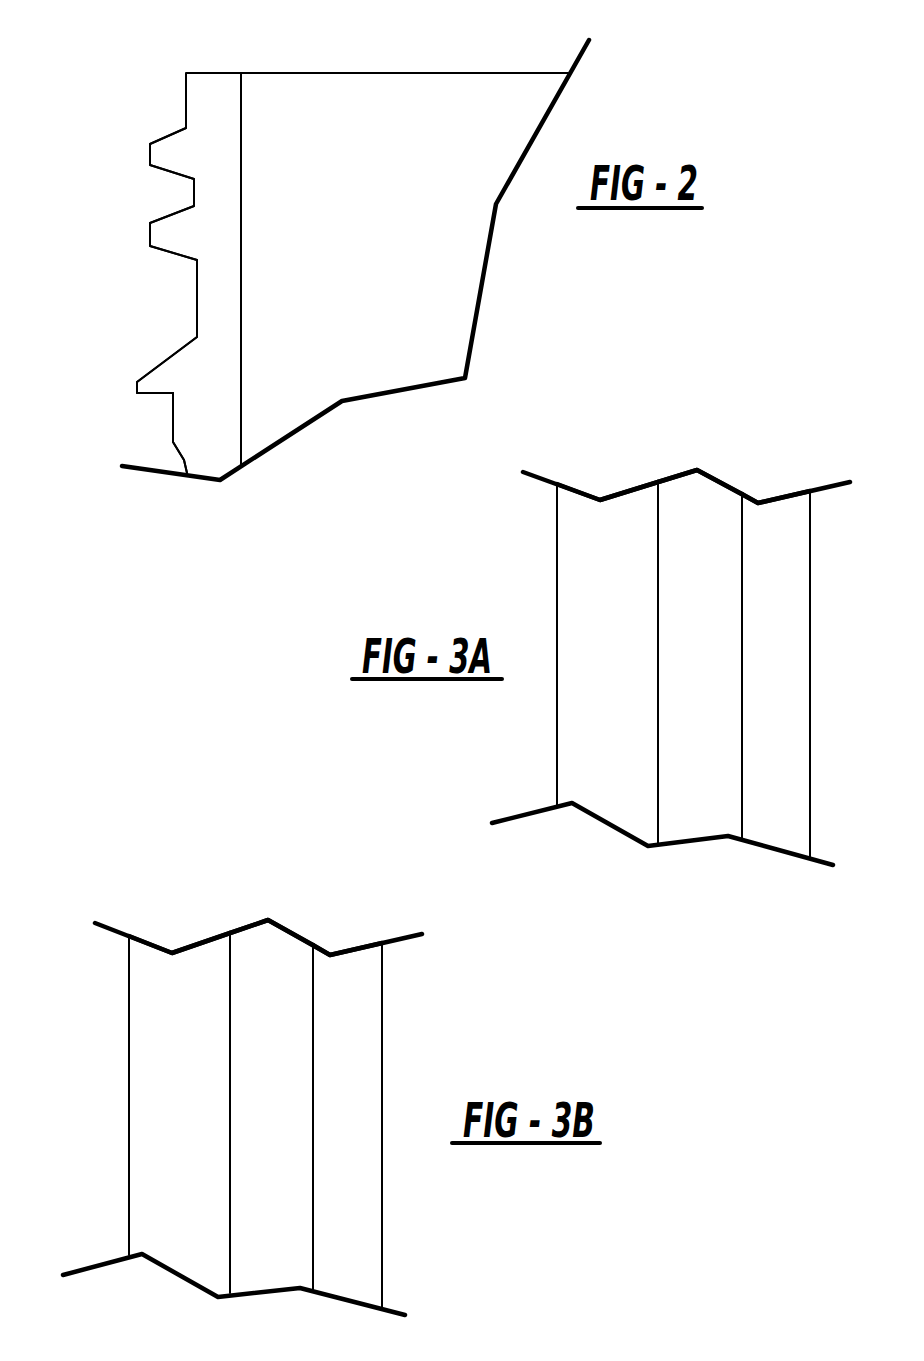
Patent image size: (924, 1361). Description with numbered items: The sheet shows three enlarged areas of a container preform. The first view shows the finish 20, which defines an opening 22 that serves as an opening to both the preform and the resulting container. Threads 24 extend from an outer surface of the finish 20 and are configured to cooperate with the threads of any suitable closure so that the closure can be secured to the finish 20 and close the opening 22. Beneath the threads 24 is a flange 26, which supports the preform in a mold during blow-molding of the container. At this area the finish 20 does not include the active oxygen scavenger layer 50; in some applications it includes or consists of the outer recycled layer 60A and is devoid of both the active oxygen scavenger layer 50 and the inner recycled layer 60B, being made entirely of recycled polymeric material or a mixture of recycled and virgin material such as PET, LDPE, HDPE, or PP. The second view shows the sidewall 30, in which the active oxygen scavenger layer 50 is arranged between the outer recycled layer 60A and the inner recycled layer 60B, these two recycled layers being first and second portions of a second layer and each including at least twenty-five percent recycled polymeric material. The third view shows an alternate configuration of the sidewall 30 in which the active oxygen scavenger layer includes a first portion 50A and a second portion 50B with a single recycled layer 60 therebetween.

In FIG. 2, the finish 20 is at (212, 105).
In FIG. 2, the opening 22 is at (242, 100).
In FIG. 2, the threads 24 is at (150, 152).
In FIG. 2, the flange 26 is at (136, 388).
In FIG. 3A, the sidewall 30 is at (557, 572).
In FIG. 3B, the sidewall 30 is at (129, 1022).
In FIG. 3A, the active oxygen scavenger layer 50 is at (696, 522).
In FIG. 3B, the first portion 50A is at (183, 980).
In FIG. 3B, the second portion 50B is at (349, 975).
In FIG. 3B, the recycled layer 60 is at (268, 973).
In FIG. 2, the outer recycled layer 60A is at (207, 402).
In FIG. 3A, the outer recycled layer 60A is at (612, 528).
In FIG. 3A, the inner recycled layer 60B is at (778, 523).